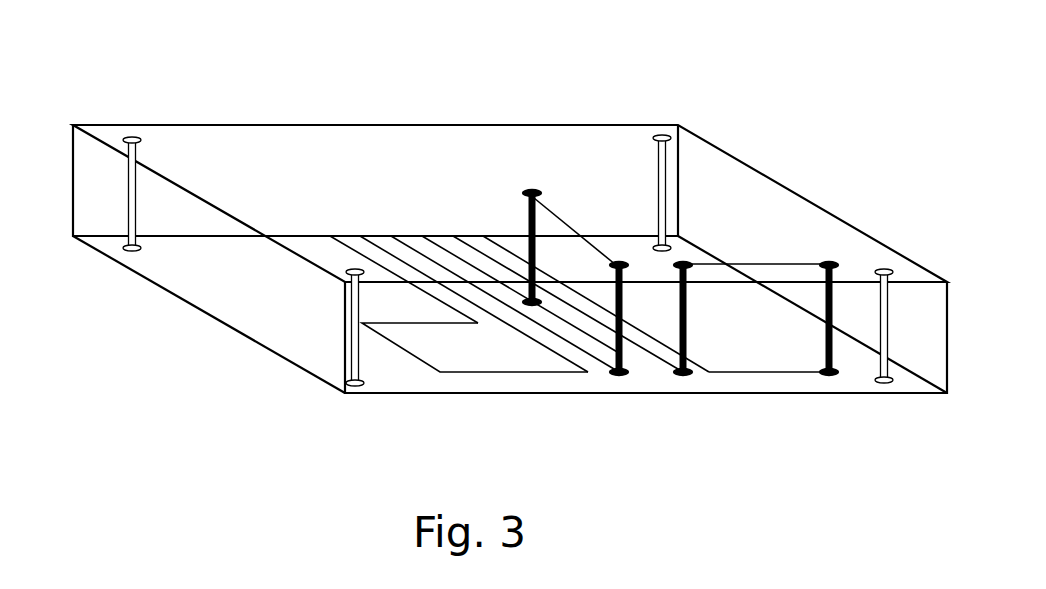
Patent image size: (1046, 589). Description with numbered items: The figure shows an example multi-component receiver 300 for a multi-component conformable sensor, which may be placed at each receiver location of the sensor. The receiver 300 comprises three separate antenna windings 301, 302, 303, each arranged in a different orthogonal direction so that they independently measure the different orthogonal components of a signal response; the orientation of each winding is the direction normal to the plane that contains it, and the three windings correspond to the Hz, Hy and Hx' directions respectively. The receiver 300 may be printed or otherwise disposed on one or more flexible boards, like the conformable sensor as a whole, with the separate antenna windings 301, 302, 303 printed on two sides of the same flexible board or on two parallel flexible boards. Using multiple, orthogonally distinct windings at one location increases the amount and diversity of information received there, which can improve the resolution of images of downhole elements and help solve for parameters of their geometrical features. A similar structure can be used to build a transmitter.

The multi-component receiver 300 is at (437, 100).
The antenna winding 301 is at (547, 205).
The antenna winding 302 is at (759, 262).
The antenna winding 303 is at (425, 363).